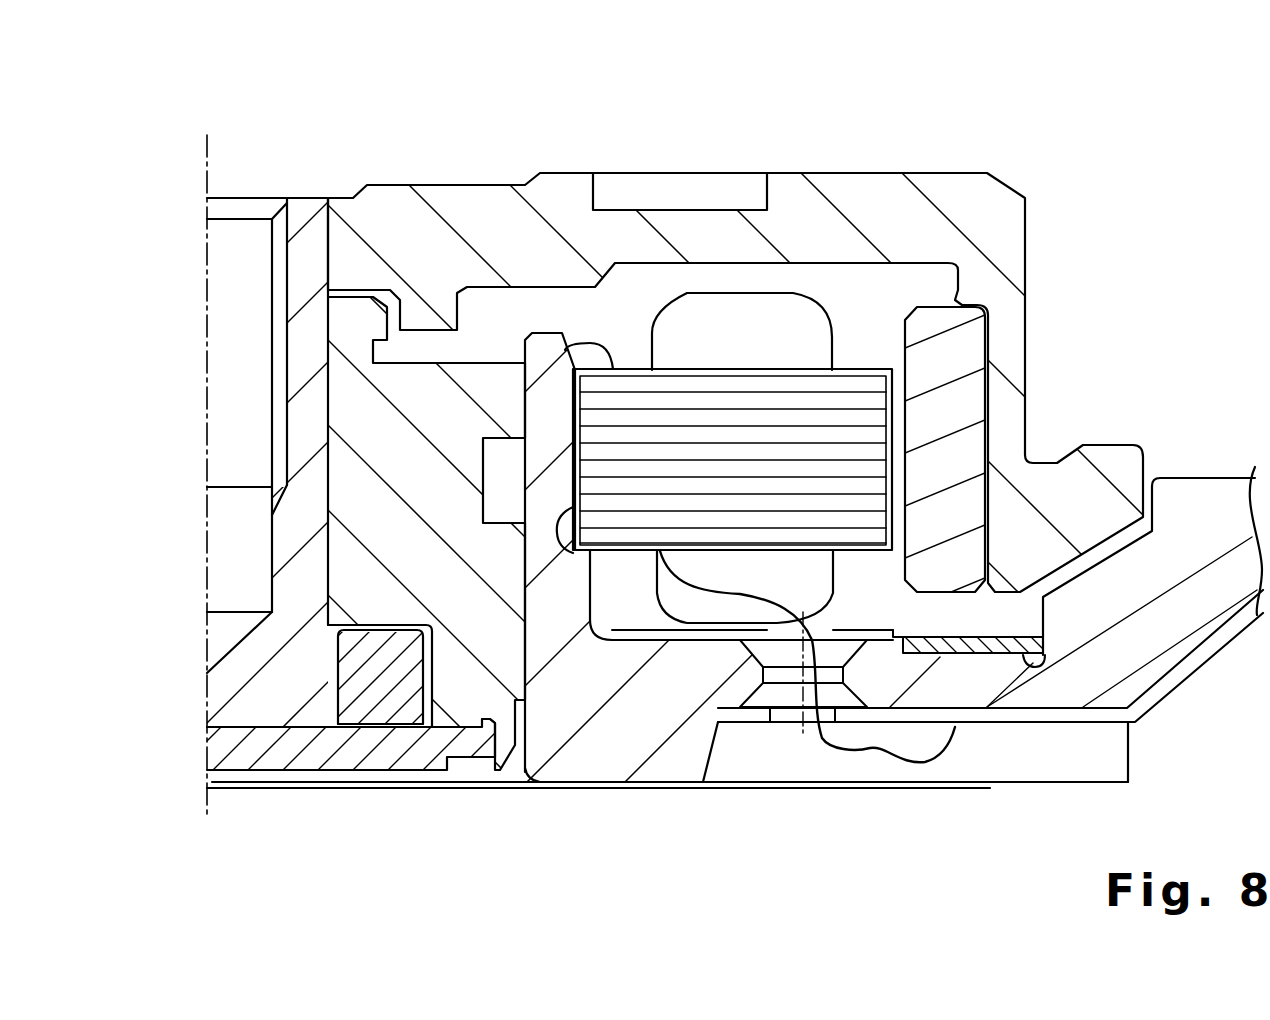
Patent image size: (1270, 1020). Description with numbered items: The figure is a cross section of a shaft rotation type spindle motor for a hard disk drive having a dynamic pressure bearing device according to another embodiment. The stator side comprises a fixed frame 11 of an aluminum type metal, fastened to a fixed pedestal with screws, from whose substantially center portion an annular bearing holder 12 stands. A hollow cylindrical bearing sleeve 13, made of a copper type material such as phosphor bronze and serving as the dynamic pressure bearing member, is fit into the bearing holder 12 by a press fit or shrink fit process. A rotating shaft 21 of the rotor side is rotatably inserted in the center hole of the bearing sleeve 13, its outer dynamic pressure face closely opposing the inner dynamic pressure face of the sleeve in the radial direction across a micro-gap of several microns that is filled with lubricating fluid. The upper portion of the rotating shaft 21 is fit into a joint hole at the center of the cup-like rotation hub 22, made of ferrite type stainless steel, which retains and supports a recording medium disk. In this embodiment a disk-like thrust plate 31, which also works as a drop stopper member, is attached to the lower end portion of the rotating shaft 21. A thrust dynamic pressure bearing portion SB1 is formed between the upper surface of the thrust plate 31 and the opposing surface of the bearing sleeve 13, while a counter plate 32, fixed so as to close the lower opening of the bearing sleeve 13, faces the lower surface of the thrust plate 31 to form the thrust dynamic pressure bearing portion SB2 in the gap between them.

The fixed frame 11 is at (1047, 765).
The bearing holder 12 is at (560, 620).
The bearing sleeve 13 is at (429, 511).
The rotating shaft 21 is at (297, 195).
The rotation hub 22 is at (833, 172).
The thrust plate 31 is at (388, 692).
The counter plate 32 is at (317, 757).
The thrust dynamic pressure bearing portion SB1 is at (382, 625).
The thrust dynamic pressure bearing portion SB2 is at (388, 692).